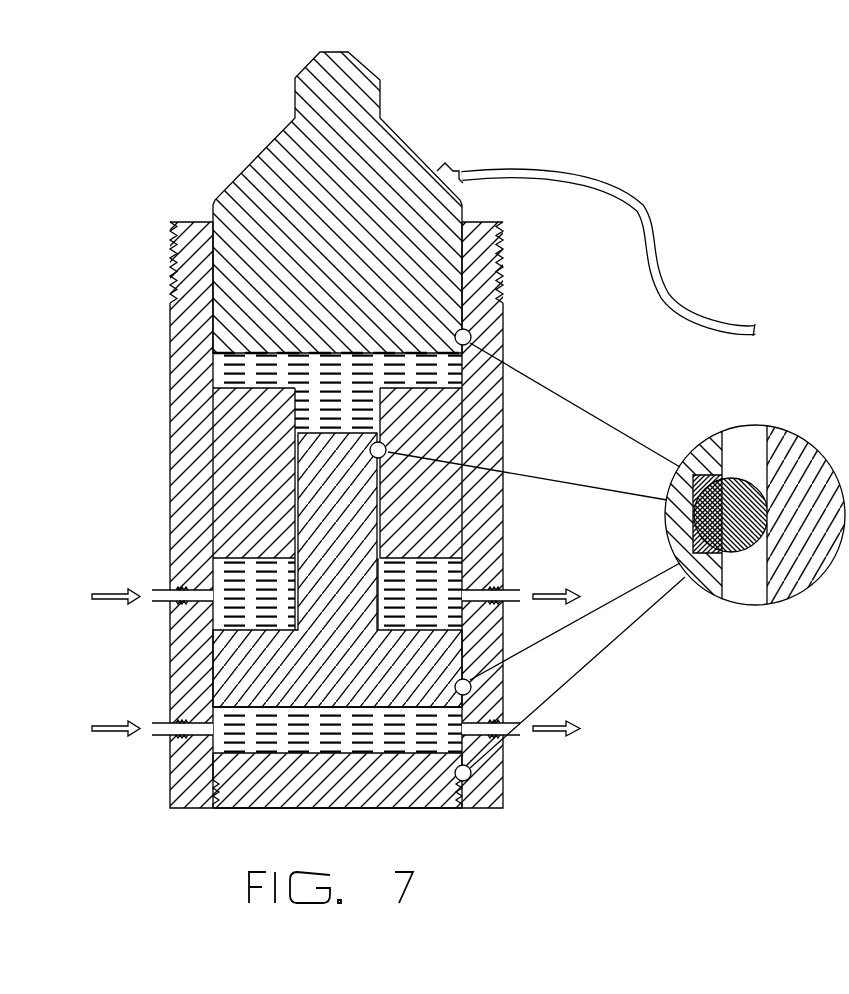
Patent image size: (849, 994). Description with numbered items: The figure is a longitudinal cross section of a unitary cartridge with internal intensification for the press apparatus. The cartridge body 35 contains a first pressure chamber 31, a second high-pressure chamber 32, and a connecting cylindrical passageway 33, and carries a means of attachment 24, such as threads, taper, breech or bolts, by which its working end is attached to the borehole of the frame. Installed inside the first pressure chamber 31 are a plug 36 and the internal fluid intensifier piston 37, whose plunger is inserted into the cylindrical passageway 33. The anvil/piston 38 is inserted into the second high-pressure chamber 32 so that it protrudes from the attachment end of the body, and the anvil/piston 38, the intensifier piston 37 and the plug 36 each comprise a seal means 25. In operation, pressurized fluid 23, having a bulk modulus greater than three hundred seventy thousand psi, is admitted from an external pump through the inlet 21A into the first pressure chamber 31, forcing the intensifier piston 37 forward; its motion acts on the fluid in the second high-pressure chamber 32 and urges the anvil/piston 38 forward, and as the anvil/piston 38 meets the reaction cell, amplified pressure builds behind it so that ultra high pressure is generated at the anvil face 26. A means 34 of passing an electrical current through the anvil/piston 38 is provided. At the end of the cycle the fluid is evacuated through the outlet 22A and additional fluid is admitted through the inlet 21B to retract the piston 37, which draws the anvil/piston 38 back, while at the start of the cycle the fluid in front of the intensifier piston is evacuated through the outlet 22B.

The pressure fluid inlet 21A is at (195, 728).
The pressure fluid inlet 21B is at (180, 590).
The pressure fluid outlet 22A is at (477, 712).
The pressure fluid outlet 22B is at (500, 585).
The pressurized fluid 23 is at (210, 750).
The means of attachment 24 is at (500, 283).
The seal means 25 is at (757, 543).
The anvil face 26 is at (345, 53).
The first pressure chamber 31 is at (337, 707).
The second high-pressure chamber 32 is at (210, 368).
The connecting cylindrical passageway 33 is at (383, 397).
The means of passing an electrical current 34 is at (690, 313).
The cartridge body 35 is at (486, 258).
The plug 36 is at (402, 798).
The internal fluid intensifier piston 37 is at (328, 503).
The anvil/piston 38 is at (402, 167).